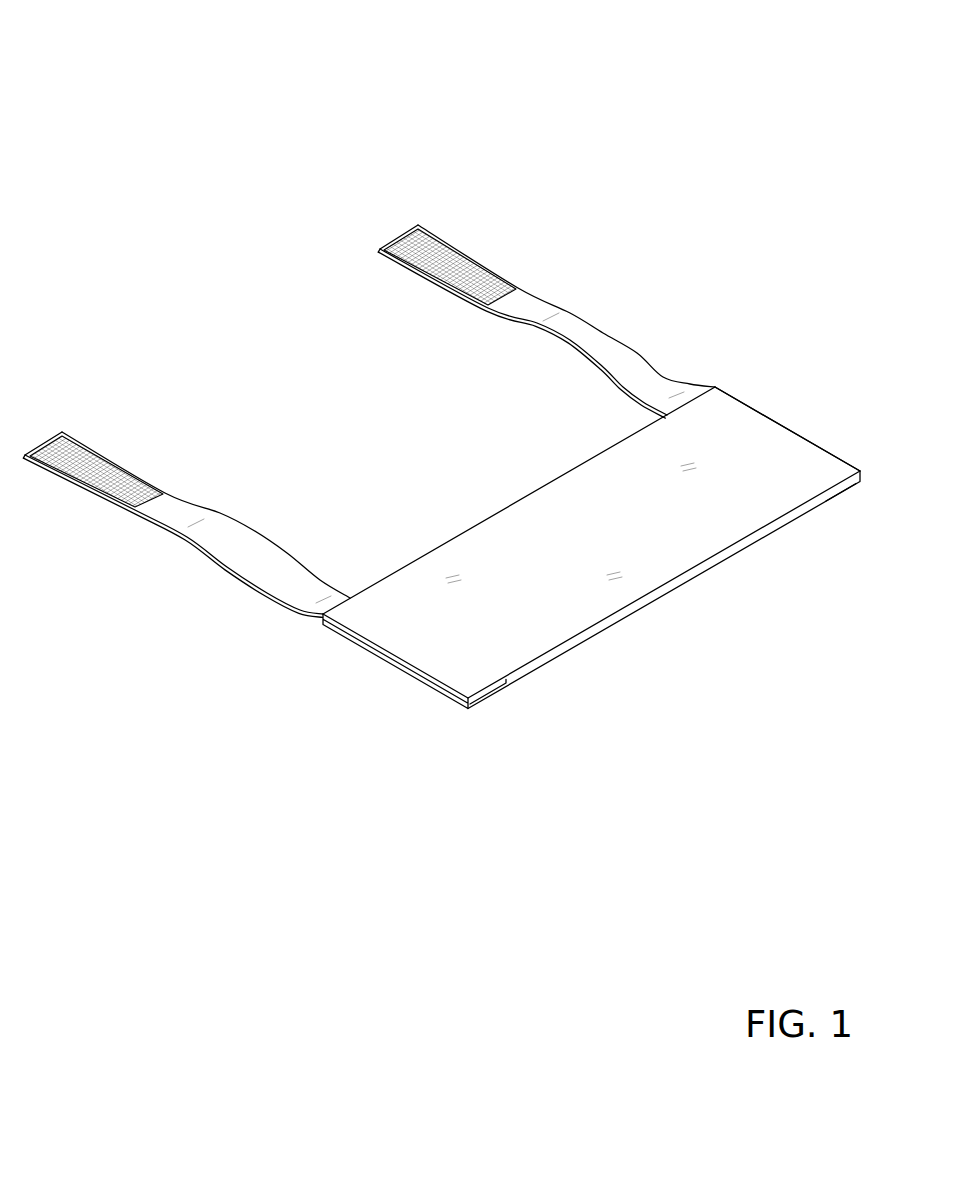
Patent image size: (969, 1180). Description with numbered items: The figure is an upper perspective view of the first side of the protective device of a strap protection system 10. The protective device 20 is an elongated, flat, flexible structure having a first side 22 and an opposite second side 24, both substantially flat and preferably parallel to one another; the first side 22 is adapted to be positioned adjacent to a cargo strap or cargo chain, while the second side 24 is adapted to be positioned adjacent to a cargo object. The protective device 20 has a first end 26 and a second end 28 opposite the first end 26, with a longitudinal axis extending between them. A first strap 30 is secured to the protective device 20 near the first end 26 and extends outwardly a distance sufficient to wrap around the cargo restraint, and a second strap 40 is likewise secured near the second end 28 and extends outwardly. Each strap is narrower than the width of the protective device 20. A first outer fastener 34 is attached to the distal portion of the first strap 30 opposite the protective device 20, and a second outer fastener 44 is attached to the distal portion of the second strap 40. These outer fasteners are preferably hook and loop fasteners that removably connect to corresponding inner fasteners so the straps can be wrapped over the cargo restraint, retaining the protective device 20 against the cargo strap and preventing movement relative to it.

The strap protection system 10 is at (208, 125).
The protective device 20 is at (538, 478).
The first side 22 is at (483, 560).
The second side 24 is at (600, 634).
The first end 26 is at (776, 421).
The second end 28 is at (377, 653).
The first strap 30 is at (587, 313).
The first outer fastener 34 is at (457, 267).
The second strap 40 is at (235, 520).
The second outer fastener 44 is at (98, 473).